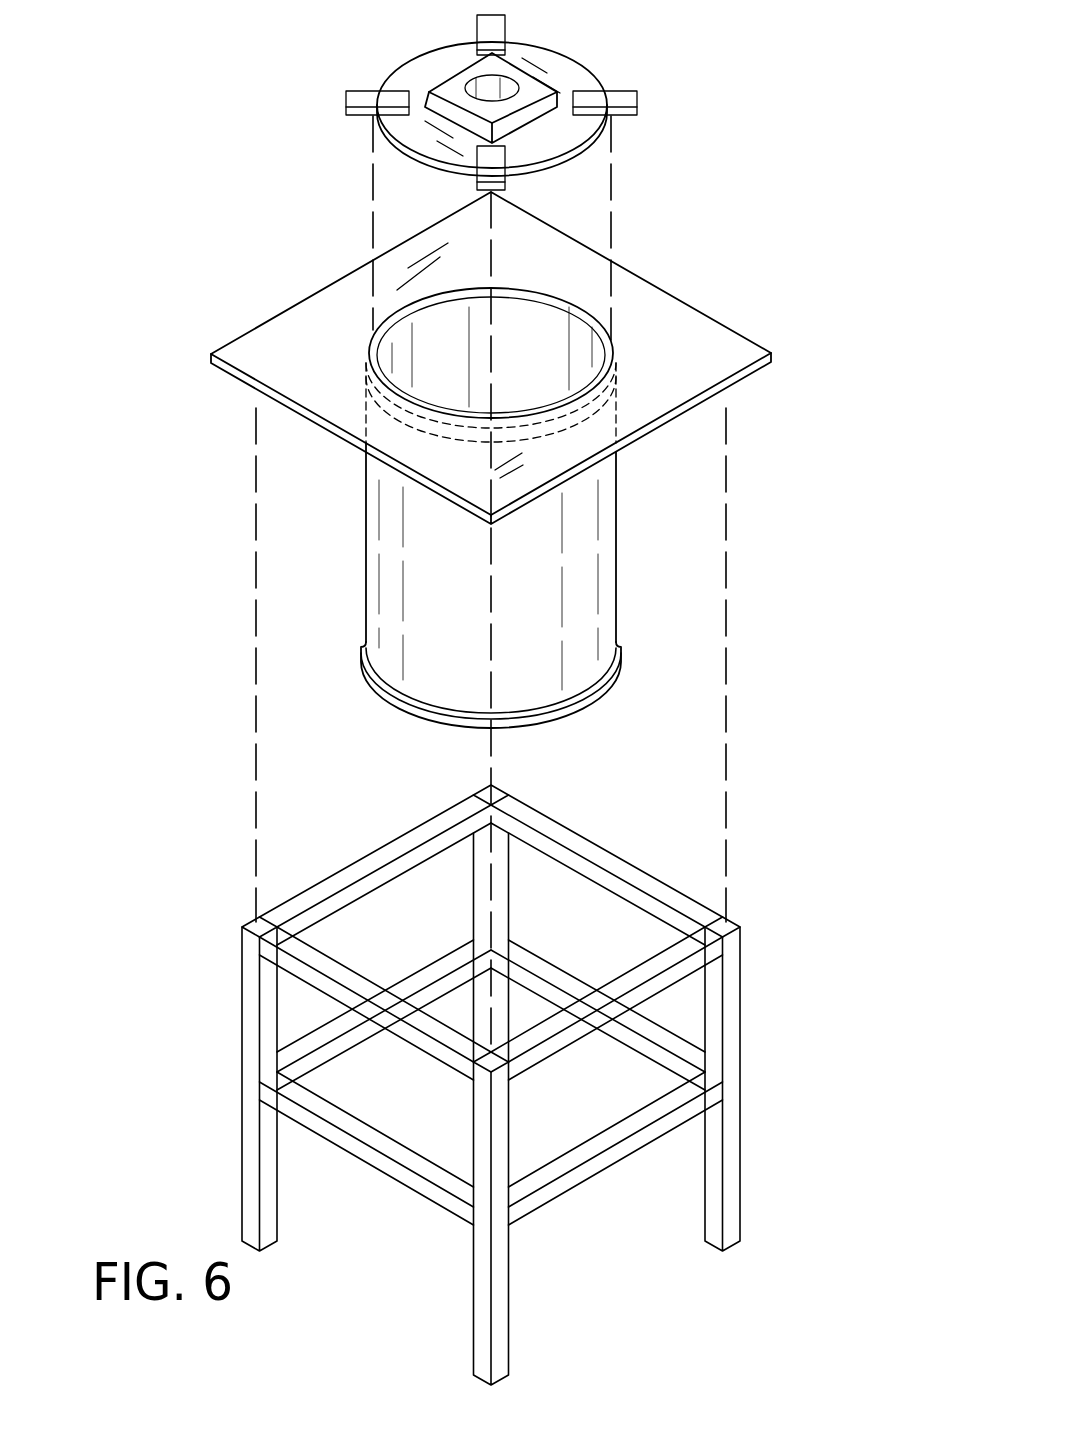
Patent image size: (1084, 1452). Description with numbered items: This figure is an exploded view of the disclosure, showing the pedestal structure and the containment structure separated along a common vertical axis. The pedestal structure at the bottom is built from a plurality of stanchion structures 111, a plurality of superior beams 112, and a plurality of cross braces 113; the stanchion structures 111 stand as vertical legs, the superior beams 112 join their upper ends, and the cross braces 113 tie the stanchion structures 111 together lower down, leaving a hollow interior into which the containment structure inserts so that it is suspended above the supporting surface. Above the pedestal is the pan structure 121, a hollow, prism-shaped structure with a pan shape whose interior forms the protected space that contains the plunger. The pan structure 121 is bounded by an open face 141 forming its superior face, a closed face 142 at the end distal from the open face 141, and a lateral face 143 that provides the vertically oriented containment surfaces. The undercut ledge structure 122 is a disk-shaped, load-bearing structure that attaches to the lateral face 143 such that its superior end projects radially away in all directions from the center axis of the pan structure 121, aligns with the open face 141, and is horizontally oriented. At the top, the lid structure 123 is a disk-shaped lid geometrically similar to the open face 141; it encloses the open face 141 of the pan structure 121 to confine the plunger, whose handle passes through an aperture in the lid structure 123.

The stanchion structures 111 is at (505, 1357).
The superior beams 112 is at (623, 868).
The cross braces 113 is at (670, 1115).
The pan structure 121 is at (493, 497).
The undercut ledge structure 122 is at (653, 328).
The lid structure 123 is at (570, 80).
The open face 141 is at (445, 342).
The closed face 142 is at (570, 713).
The lateral face 143 is at (390, 577).